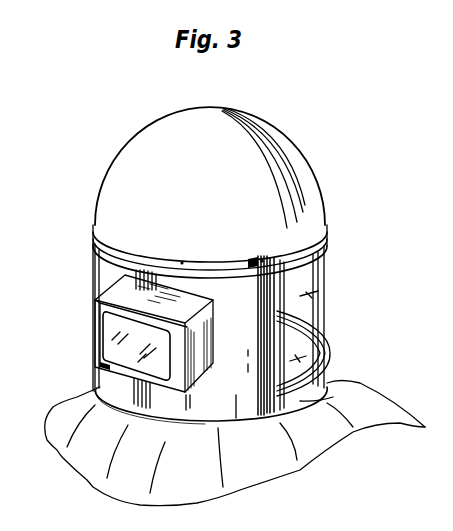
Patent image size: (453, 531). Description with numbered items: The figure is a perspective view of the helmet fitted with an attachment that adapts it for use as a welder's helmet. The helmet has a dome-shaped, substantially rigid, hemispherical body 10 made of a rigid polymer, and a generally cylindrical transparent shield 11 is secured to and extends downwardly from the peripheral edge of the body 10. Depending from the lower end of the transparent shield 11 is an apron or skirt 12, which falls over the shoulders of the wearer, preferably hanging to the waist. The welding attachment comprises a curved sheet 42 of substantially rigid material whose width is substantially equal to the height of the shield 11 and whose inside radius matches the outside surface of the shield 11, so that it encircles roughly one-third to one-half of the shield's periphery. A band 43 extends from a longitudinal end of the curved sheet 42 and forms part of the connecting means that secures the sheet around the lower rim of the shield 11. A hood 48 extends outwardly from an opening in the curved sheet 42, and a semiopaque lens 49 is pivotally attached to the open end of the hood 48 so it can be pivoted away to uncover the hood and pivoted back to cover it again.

The dome-shaped body 10 is at (302, 165).
The transparent shield 11 is at (320, 313).
The apron or skirt 12 is at (278, 467).
The curved sheet 42 is at (205, 412).
The band 43 is at (333, 397).
The hood 48 is at (127, 284).
The semiopaque lens 49 is at (113, 353).